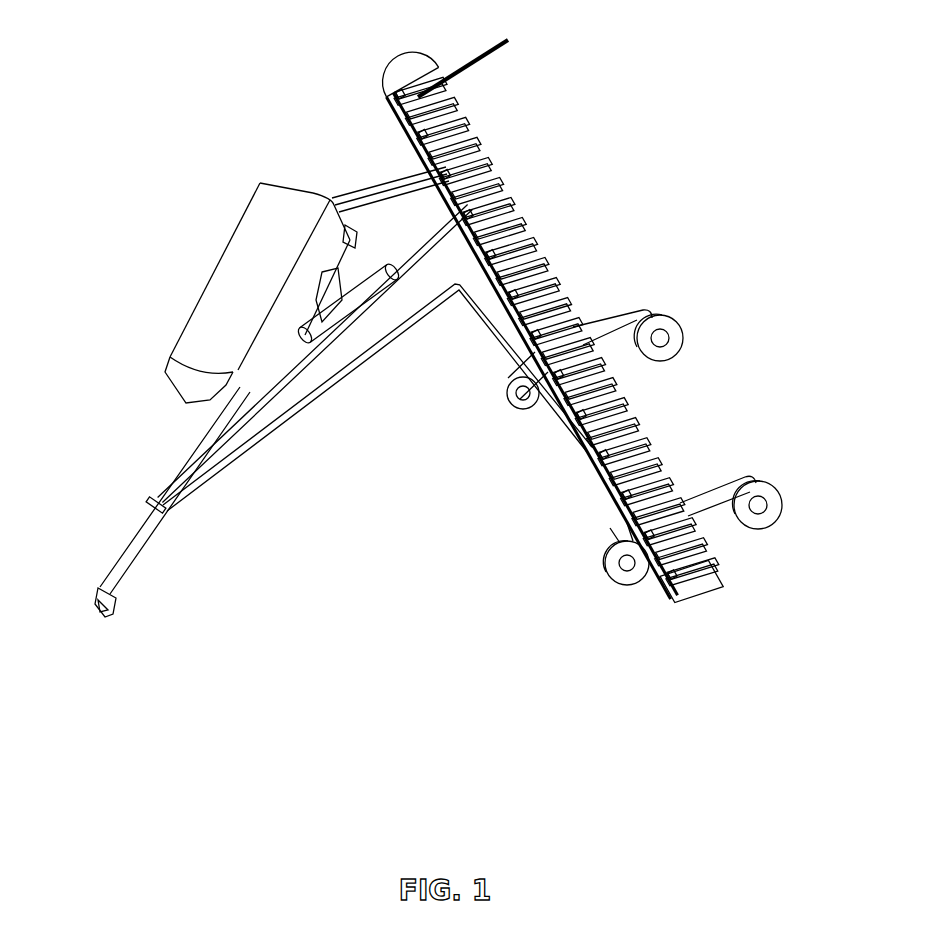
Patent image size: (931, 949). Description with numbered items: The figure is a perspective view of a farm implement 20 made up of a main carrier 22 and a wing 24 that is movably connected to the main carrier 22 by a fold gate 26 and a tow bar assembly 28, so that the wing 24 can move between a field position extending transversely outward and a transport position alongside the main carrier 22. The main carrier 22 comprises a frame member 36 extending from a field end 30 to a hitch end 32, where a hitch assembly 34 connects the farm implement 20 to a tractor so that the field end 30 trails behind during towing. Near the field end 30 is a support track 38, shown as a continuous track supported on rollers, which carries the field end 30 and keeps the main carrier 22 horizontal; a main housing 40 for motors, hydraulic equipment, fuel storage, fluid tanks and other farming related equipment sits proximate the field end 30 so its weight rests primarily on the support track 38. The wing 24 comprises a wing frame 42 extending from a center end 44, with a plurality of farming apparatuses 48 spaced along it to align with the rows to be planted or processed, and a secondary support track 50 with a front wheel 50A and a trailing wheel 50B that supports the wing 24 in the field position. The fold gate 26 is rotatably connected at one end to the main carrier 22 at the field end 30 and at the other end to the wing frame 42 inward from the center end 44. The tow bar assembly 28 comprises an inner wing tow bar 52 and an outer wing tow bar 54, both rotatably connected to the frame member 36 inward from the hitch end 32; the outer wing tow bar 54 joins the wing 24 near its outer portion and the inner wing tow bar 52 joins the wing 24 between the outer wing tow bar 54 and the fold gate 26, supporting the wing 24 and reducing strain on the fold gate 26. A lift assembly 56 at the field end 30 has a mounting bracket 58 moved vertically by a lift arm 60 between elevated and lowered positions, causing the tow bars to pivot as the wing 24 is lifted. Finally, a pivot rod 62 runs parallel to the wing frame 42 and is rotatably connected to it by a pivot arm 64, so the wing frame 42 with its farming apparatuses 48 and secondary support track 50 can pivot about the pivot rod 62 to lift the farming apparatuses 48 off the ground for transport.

The farm implement 20 is at (576, 78).
The main carrier 22 is at (159, 452).
The wing 24 is at (548, 228).
The fold gate 26 is at (414, 172).
The tow bar assembly 28 is at (334, 422).
The field end 30 is at (332, 190).
The hitch end 32 is at (116, 600).
The hitch assembly 34 is at (100, 617).
The frame member 36 is at (130, 545).
The support track 38 is at (365, 365).
The main housing 40 is at (172, 320).
The wing frame 42 is at (492, 190).
The center end 44 is at (394, 88).
The farming apparatus 48 is at (470, 132).
The secondary support track 50 is at (739, 552).
The front wheel 50A is at (605, 578).
The trailing wheel 50B is at (768, 480).
The inner wing tow bar 52 is at (262, 452).
The outer wing tow bar 54 is at (468, 330).
The lift assembly 56 is at (305, 178).
The mounting bracket 58 is at (350, 236).
The lift arm 60 is at (338, 268).
The pivot rod 62 is at (483, 56).
The pivot arm 64 is at (446, 210).